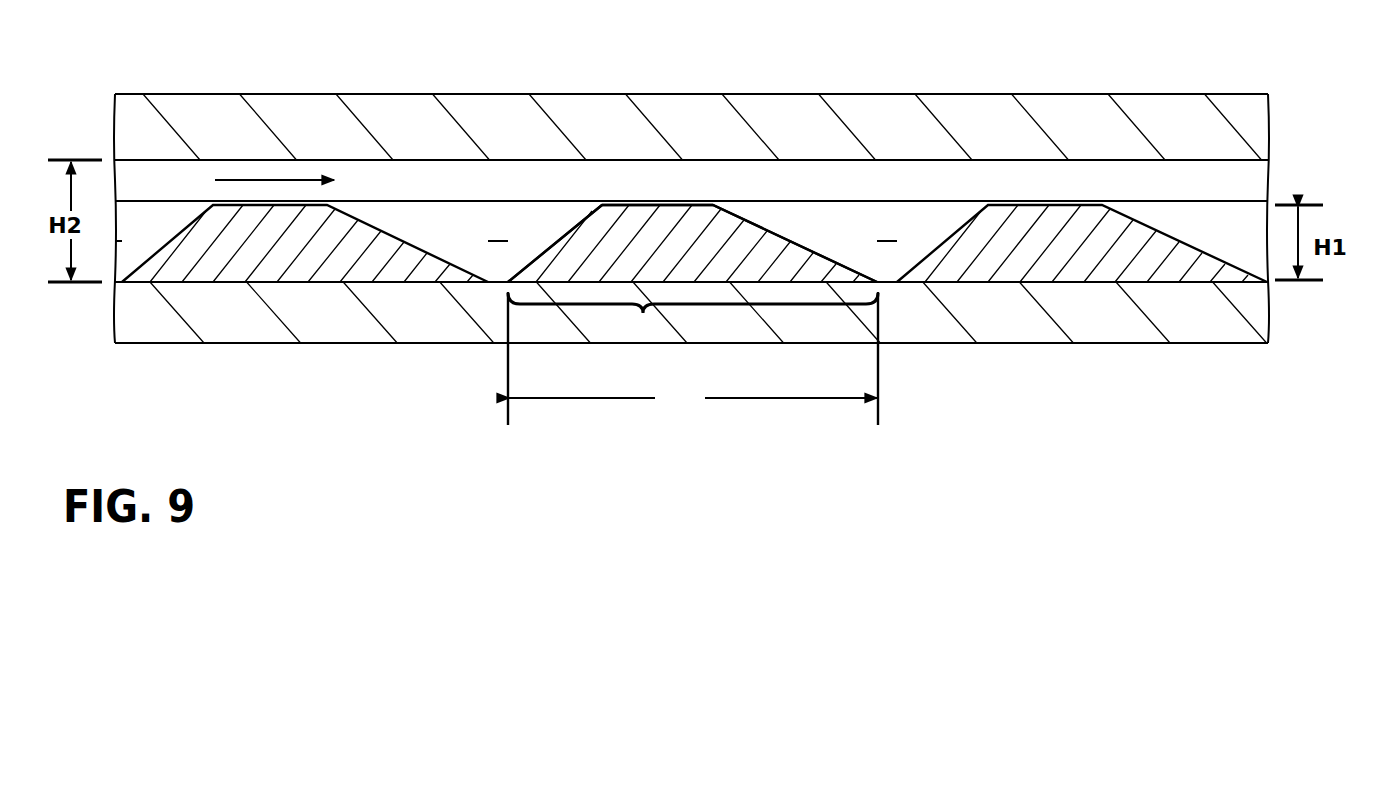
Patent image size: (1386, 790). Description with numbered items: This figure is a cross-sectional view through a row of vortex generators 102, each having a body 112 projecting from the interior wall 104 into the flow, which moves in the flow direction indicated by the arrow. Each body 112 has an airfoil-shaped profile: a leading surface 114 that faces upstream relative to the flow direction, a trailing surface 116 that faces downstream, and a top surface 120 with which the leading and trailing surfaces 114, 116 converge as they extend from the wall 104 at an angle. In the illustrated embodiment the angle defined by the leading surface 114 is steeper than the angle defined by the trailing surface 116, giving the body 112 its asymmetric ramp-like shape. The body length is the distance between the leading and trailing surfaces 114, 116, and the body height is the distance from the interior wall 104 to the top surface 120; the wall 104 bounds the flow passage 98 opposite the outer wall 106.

The cooling channel 98 is at (1202, 224).
The vortex generator 102 is at (194, 206).
The interior wall 104 is at (1266, 280).
The outer wall 106 is at (1270, 172).
The body 112 is at (640, 310).
The leading surface 114 is at (571, 230).
The trailing surface 116 is at (768, 230).
The top surface 120 is at (627, 202).